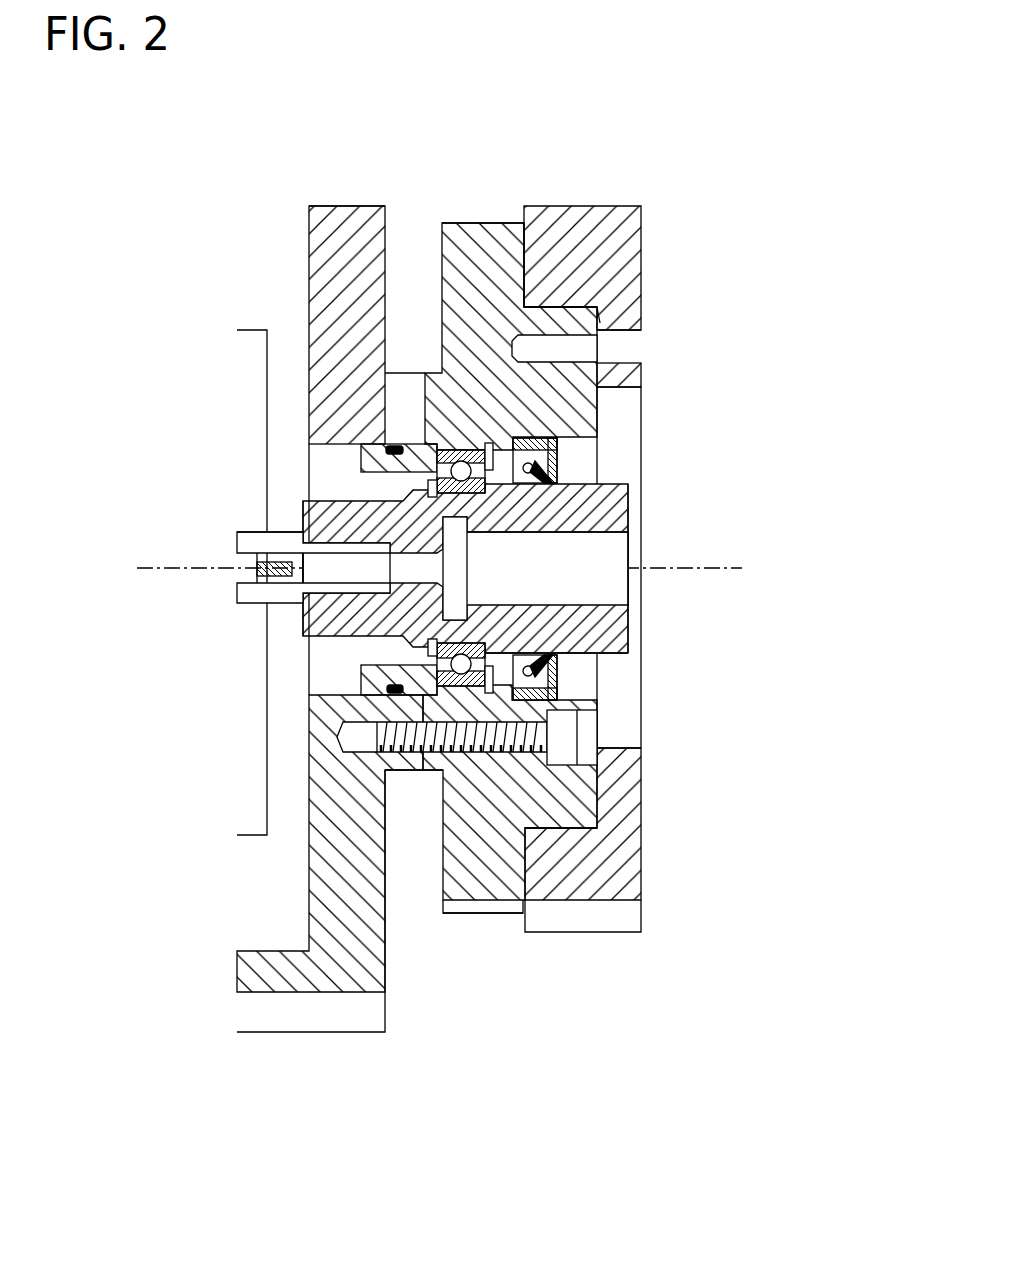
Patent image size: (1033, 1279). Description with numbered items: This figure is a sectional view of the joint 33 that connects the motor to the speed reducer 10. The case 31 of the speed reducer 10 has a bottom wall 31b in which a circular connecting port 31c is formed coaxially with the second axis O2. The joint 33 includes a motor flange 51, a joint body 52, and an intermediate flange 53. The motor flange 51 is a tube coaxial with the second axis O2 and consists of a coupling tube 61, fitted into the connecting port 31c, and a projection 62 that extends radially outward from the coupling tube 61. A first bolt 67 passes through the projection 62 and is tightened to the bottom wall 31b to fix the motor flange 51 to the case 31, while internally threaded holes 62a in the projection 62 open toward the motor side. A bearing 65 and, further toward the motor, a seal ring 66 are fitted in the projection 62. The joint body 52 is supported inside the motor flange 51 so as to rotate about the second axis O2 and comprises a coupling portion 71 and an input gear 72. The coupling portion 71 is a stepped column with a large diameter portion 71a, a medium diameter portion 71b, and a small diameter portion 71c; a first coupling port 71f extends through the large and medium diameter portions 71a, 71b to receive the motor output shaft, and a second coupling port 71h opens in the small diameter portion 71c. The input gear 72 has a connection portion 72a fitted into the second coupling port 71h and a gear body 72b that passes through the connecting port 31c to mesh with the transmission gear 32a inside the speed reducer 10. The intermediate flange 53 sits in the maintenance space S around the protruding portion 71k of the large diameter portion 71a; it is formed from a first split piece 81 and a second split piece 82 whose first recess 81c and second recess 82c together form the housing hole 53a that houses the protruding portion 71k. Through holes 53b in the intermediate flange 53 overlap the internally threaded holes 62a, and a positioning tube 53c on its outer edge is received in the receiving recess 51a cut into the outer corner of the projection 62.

The speed reducer 10 is at (715, 142).
The case 31 is at (300, 1000).
The bottom wall 31b is at (377, 923).
The connecting port 31c is at (398, 445).
The transmission gear 32a is at (252, 800).
The joint 33 is at (585, 165).
The motor flange 51 is at (490, 922).
The receiving recess 51a is at (556, 305).
The joint body 52 is at (177, 497).
The intermediate flange 53 is at (575, 942).
The housing hole 53a is at (603, 738).
The through holes 53b is at (590, 338).
The positioning tube 53c is at (553, 263).
The coupling tube 61 is at (370, 678).
The projection 62 is at (500, 893).
The internally threaded holes 62a is at (555, 340).
The bearing 65 is at (462, 452).
The seal ring 66 is at (560, 462).
The first bolt 67 is at (462, 668).
The coupling portion 71 is at (335, 490).
The large diameter portion 71a is at (553, 642).
The medium diameter portion 71b is at (445, 700).
The small diameter portion 71c is at (312, 617).
The first coupling port 71f is at (600, 533).
The second coupling port 71h is at (300, 583).
The protruding portion 71k is at (610, 645).
The input gear 72 is at (283, 520).
The connection portion 72a is at (400, 585).
The gear body 72b is at (248, 543).
The first split piece 81 is at (650, 223).
The first recess 81c is at (620, 387).
The second split piece 82 is at (652, 826).
The second recess 82c is at (632, 747).
The second axis O2 is at (150, 568).
The maintenance space S is at (618, 318).